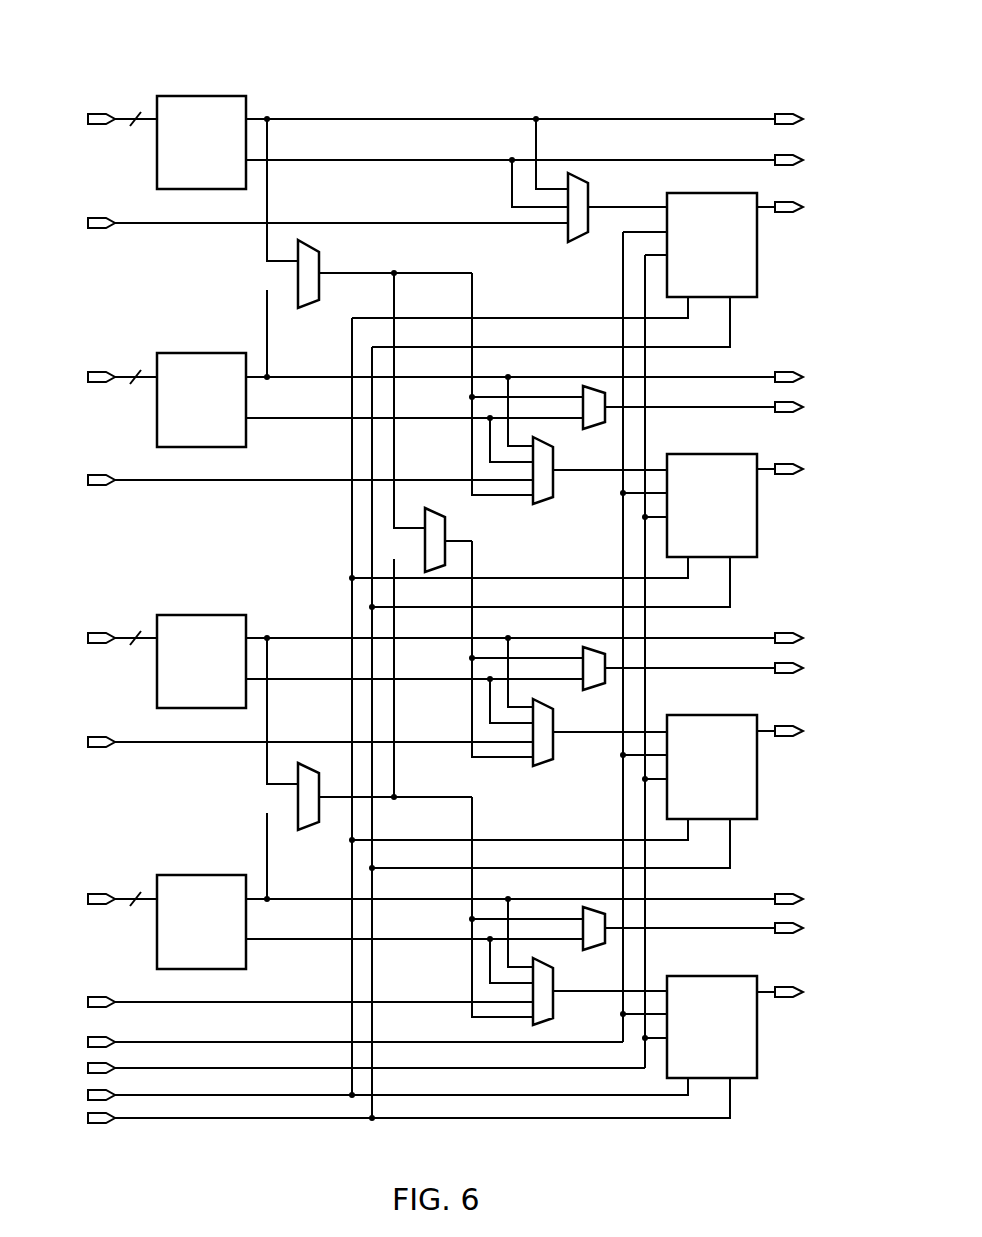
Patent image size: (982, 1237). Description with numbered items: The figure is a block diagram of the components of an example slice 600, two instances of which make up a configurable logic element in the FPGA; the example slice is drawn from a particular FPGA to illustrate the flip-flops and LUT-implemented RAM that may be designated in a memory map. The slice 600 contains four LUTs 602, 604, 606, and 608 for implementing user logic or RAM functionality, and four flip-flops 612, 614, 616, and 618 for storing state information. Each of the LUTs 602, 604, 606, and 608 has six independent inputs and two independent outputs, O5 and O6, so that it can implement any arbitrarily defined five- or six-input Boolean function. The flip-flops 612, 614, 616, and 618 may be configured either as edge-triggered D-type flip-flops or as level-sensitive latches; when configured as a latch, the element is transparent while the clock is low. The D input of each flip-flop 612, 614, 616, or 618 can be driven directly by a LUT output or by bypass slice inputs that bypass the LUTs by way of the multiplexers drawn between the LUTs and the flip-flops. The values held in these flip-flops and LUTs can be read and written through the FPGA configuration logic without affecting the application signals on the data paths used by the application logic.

The slice 600 is at (473, 59).
The LUT 602 is at (238, 96).
The LUT 604 is at (175, 353).
The LUT 606 is at (238, 615).
The LUT 608 is at (175, 875).
The flip-flop 612 is at (755, 269).
The flip-flop 614 is at (755, 530).
The flip-flop 616 is at (755, 792).
The flip-flop 618 is at (755, 1062).